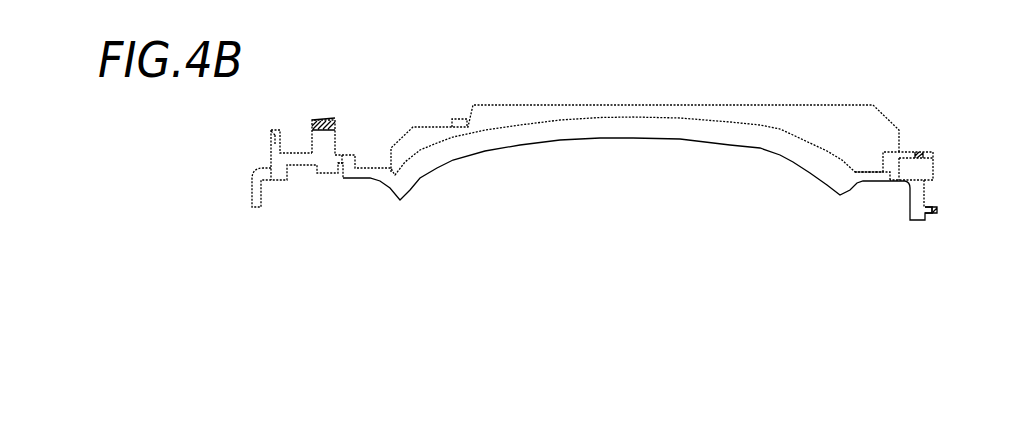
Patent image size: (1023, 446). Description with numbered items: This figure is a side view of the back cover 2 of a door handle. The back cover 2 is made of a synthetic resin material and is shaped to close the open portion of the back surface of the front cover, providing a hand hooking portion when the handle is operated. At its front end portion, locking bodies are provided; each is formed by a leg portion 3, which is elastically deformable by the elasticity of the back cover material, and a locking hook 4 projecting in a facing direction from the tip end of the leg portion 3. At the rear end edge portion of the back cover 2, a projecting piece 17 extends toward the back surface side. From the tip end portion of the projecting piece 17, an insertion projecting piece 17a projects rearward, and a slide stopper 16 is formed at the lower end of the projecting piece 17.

The back cover 2 is at (794, 77).
The leg portion 3 is at (328, 140).
The locking hook 4 is at (333, 117).
The slide stopper 16 is at (928, 220).
The projecting piece 17 is at (913, 202).
The insertion projecting piece 17a is at (928, 207).